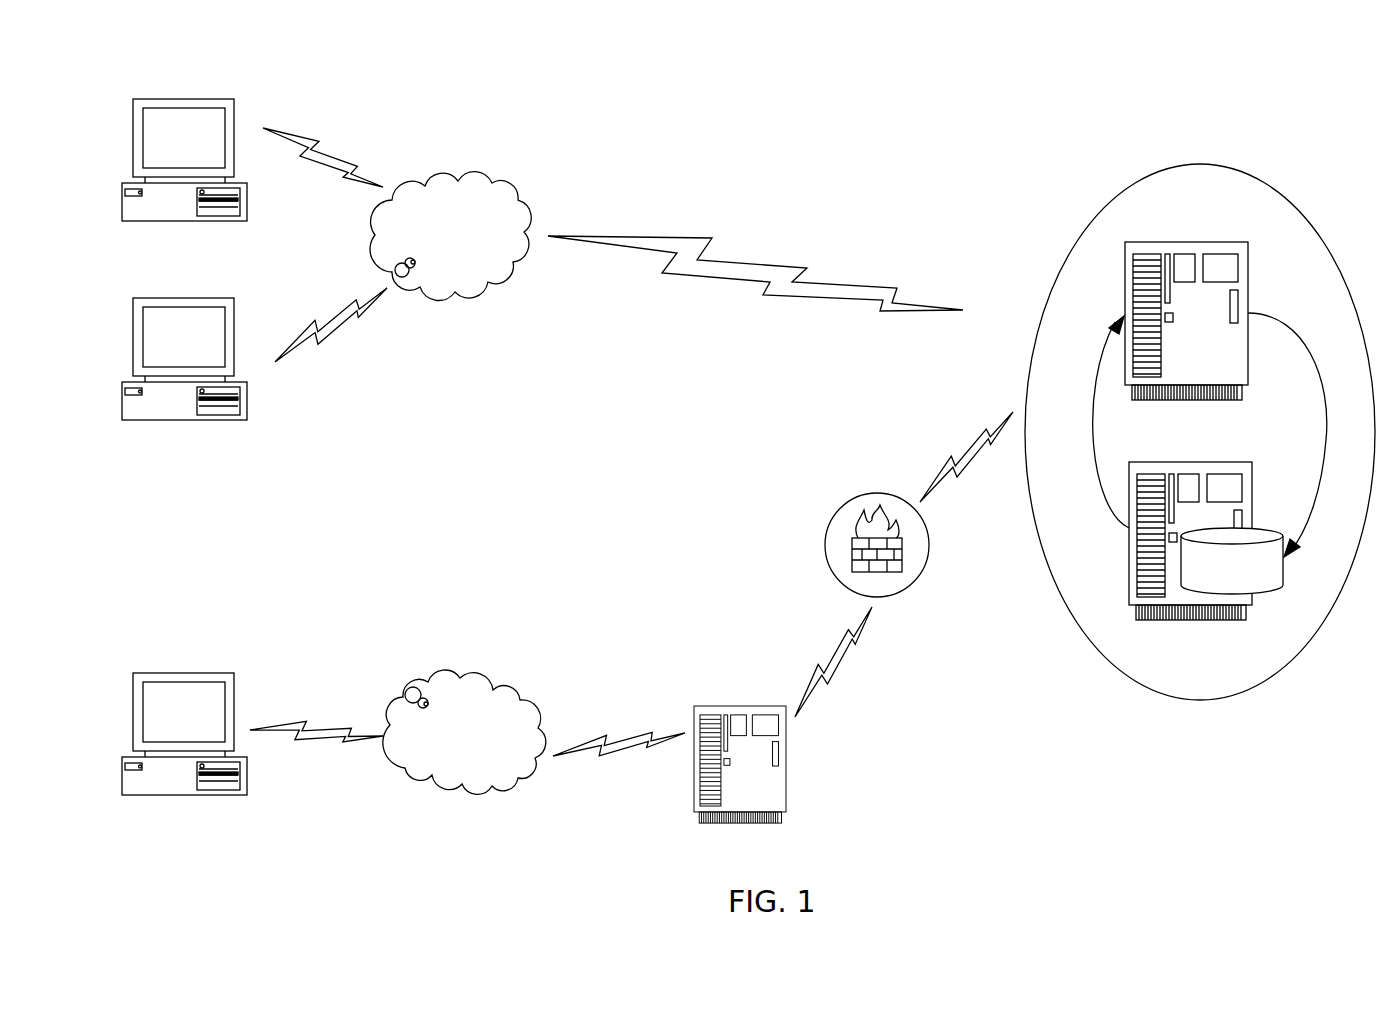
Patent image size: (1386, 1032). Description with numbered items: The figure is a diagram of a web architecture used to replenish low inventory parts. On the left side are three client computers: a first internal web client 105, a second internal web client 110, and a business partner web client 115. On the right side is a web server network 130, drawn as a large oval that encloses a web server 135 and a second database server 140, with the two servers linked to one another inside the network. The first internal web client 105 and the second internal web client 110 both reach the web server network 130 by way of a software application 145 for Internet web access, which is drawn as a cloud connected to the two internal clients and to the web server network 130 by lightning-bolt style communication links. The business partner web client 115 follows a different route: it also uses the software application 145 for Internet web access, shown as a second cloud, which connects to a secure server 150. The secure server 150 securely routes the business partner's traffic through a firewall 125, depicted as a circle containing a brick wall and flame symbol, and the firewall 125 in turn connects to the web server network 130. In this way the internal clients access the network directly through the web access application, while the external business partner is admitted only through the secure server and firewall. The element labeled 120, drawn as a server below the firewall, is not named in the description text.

The first internal web client 105 is at (210, 99).
The second internal web client 110 is at (208, 298).
The business partner web client 115 is at (210, 673).
The server 120 is at (787, 788).
The firewall 125 is at (840, 517).
The web server network 130 is at (1112, 205).
The web server 135 is at (1204, 242).
The second database server 140 is at (1225, 462).
The software application 145 is at (492, 181).
The secure server 150 is at (513, 693).